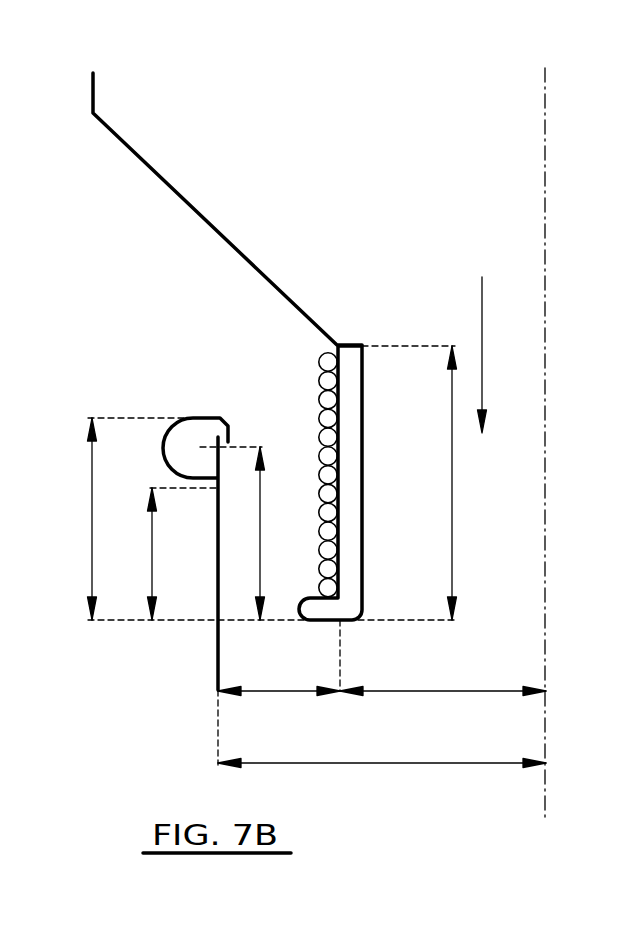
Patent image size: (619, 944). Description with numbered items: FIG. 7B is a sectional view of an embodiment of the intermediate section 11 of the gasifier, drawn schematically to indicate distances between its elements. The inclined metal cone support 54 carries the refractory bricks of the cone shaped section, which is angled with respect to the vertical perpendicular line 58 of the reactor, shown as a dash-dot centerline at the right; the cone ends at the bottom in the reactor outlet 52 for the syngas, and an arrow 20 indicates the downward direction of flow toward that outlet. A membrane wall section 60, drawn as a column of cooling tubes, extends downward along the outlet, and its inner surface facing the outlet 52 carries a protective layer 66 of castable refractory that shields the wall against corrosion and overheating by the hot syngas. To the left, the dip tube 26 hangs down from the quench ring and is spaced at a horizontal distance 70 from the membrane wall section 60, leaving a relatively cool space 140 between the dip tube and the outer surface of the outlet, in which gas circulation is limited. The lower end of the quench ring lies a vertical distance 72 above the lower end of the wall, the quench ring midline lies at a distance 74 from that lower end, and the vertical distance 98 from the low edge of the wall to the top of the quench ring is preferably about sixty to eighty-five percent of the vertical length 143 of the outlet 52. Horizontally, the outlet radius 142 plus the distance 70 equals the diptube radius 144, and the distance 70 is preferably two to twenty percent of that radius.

The intermediate section 11 is at (160, 312).
The metal cone support 54 is at (185, 204).
The vertical perpendicular line 58 is at (545, 142).
The direction arrow 20 is at (480, 339).
The protective layer 66 is at (348, 390).
The membrane wall section 60 is at (320, 356).
The space 140 is at (288, 415).
The dip tube 26 is at (218, 668).
The reactor outlet 52 is at (526, 534).
The vertical distance 98 is at (78, 519).
The vertical distance 72 is at (139, 554).
The distance 74 is at (246, 533).
The vertical length 143 is at (431, 483).
The horizontal distance 70 is at (279, 676).
The outlet radius 142 is at (443, 675).
The diptube radius 144 is at (382, 749).